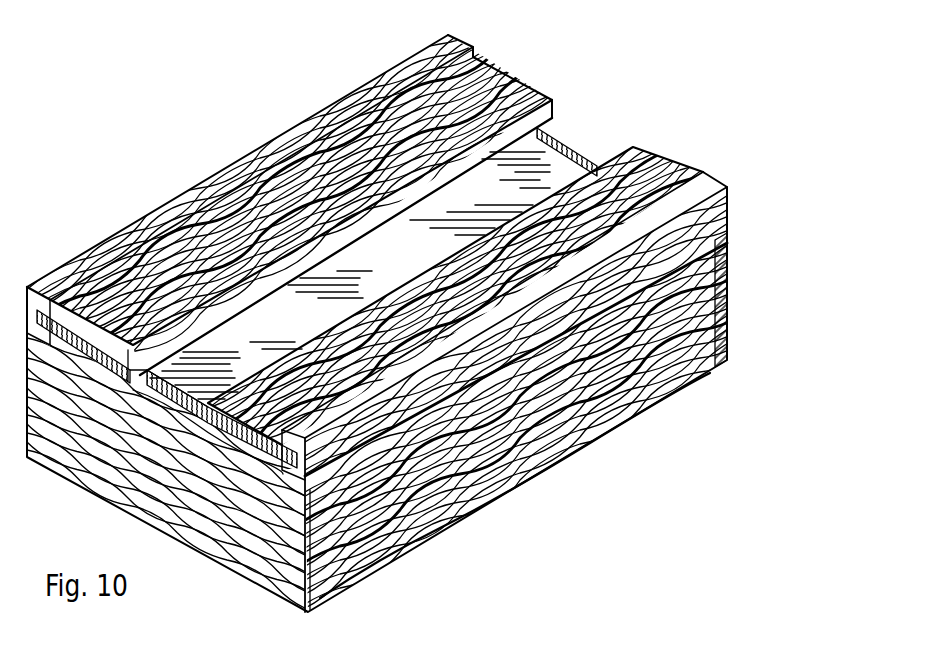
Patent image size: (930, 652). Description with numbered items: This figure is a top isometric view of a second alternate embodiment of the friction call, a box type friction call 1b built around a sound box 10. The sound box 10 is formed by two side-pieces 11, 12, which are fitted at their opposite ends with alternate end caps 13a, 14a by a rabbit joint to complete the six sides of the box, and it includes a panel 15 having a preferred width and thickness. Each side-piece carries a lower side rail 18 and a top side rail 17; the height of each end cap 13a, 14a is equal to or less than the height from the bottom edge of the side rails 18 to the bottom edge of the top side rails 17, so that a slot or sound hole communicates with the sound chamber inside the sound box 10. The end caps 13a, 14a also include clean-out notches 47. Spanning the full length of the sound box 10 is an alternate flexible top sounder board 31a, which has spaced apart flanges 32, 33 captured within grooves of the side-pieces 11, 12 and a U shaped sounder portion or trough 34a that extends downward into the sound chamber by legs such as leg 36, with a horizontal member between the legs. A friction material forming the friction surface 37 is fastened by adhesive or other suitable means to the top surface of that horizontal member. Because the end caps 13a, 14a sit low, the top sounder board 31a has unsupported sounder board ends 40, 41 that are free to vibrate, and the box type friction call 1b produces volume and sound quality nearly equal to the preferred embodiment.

The box type friction call 1b is at (575, 68).
The sound box 10 is at (478, 355).
The side-piece 11 is at (730, 257).
The side-piece 12 is at (53, 277).
The end cap 13a is at (253, 527).
The end cap 14a is at (508, 70).
The panel 15 is at (390, 477).
The top side rail 17 is at (717, 218).
The side rail 18 is at (710, 347).
The top sounder board 31a is at (470, 244).
The flange 32 is at (388, 125).
The flange 33 is at (630, 192).
The U shaped sounder portion or trough 34a is at (290, 330).
The leg 36 is at (560, 135).
The friction surface 37 is at (200, 455).
The unsupported sounder board end 40 is at (663, 162).
The unsupported sounder board end 41 is at (207, 462).
The clean-out notch 47 is at (587, 152).